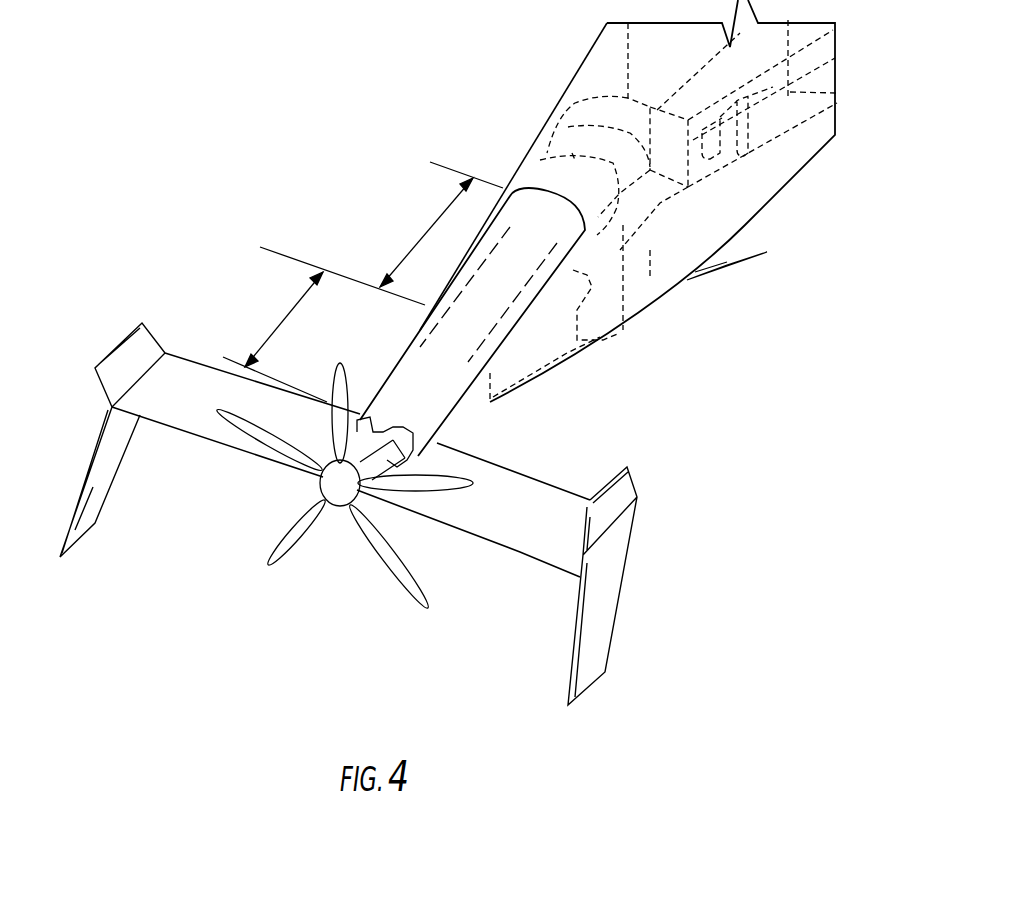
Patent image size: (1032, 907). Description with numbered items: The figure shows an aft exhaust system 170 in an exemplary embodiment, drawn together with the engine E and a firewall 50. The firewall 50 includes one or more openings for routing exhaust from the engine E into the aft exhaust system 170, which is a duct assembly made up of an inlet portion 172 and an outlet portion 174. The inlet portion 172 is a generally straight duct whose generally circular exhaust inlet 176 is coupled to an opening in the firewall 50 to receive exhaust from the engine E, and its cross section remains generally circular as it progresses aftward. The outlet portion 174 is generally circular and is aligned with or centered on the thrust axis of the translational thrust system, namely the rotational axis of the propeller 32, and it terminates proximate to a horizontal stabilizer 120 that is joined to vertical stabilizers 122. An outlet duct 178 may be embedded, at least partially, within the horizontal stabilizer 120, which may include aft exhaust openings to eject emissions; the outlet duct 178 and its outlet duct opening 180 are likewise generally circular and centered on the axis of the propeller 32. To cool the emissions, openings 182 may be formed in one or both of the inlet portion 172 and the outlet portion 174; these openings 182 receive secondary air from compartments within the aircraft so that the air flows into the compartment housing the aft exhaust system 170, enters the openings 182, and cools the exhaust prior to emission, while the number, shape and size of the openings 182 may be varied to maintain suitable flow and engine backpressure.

The engine E is at (573, 163).
The propeller 32 is at (327, 508).
The firewall 50 is at (627, 278).
The horizontal stabilizer 120 is at (528, 545).
The vertical stabilizers 122 is at (602, 605).
The aft exhaust system 170 is at (535, 315).
The inlet portion 172 is at (415, 247).
The outlet portion 174 is at (287, 313).
The exhaust inlet 176 is at (567, 220).
The outlet duct 178 is at (437, 408).
The outlet duct opening 180 is at (417, 460).
The openings 182 is at (533, 275).